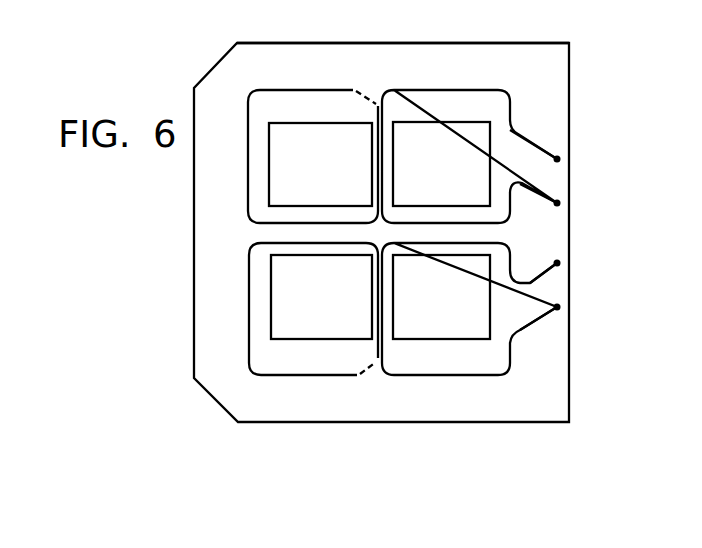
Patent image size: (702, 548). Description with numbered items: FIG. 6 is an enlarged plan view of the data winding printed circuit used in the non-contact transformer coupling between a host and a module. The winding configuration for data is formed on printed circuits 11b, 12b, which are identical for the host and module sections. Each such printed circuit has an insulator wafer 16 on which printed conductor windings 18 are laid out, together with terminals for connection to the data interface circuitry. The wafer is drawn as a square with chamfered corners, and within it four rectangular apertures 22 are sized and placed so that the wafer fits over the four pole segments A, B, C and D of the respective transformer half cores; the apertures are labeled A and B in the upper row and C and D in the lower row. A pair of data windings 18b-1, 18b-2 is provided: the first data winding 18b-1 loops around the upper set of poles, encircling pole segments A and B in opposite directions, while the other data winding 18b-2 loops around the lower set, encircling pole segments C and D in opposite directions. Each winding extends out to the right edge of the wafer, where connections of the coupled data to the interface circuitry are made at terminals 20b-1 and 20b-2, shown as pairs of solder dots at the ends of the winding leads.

The printed circuit 11b is at (365, 21).
The printed circuit 12b is at (280, 40).
The insulator wafer 16 is at (213, 64).
The printed conductor windings 18 is at (402, 211).
The data winding 18b-1 is at (425, 90).
The data winding 18b-2 is at (447, 375).
The terminal 20b-1 is at (557, 159).
The terminal 20b-2 is at (557, 263).
The apertures 22 is at (269, 184).